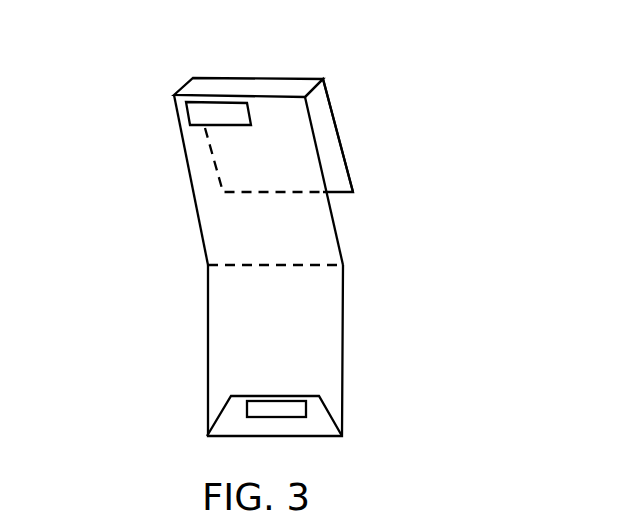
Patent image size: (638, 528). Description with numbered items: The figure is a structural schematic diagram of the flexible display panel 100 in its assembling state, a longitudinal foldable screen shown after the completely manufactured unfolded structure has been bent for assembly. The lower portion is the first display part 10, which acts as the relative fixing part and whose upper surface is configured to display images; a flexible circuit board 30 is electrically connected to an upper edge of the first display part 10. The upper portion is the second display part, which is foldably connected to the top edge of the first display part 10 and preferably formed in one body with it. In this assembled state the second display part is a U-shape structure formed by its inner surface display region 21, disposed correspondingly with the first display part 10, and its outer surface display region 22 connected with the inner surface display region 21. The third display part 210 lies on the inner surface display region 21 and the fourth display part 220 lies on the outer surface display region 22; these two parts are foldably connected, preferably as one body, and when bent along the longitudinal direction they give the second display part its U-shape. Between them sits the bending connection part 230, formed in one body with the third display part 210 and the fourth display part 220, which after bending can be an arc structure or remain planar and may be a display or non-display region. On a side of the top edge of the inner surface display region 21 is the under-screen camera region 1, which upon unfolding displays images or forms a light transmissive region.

The flexible display panel 100 is at (150, 50).
The bending connection part 230 is at (263, 87).
The outer surface display region 22 is at (325, 135).
The fourth display part 220 is at (347, 167).
The under-screen camera region 1 is at (207, 113).
The third display part 210 is at (223, 218).
The inner surface display region 21 is at (300, 243).
The first display part 10 is at (312, 338).
The flexible circuit board 30 is at (312, 426).